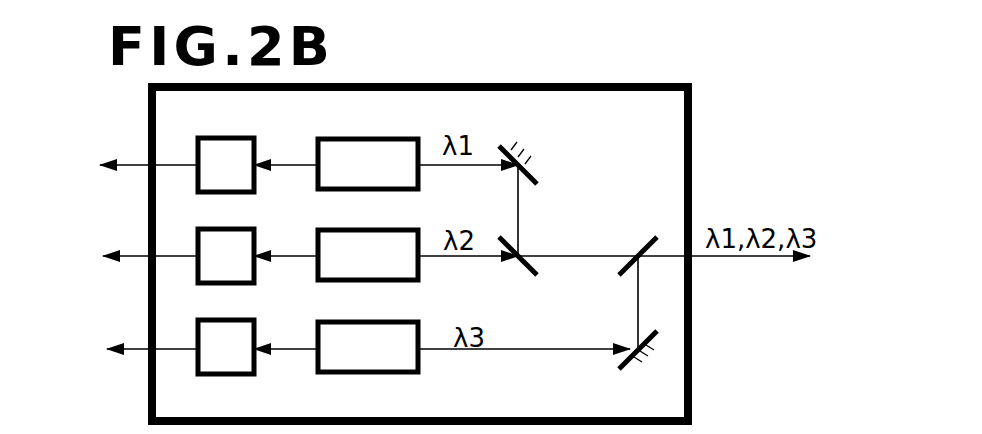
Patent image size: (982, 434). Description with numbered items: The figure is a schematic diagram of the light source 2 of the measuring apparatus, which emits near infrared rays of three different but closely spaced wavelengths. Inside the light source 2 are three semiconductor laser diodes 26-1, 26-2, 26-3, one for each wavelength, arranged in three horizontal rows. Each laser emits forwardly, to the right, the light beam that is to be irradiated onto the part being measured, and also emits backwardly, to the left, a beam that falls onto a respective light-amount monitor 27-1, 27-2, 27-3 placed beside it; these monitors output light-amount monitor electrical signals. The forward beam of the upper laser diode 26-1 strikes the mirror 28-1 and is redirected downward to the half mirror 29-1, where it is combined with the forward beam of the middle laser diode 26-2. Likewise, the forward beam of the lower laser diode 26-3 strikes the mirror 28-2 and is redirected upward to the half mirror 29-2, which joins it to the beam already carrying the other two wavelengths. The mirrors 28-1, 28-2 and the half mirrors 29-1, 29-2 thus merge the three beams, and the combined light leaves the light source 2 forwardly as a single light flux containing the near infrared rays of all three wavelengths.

The light source 2 is at (460, 84).
The semiconductor laser diode 26-1 is at (363, 137).
The semiconductor laser diode 26-2 is at (362, 206).
The semiconductor laser diode 26-3 is at (362, 296).
The light-amount monitor 27-1 is at (206, 137).
The light-amount monitor 27-2 is at (212, 206).
The light-amount monitor 27-3 is at (212, 296).
The mirror 28-1 is at (528, 152).
The mirror 28-2 is at (621, 370).
The half mirror 29-1 is at (533, 273).
The half mirror 29-2 is at (652, 240).